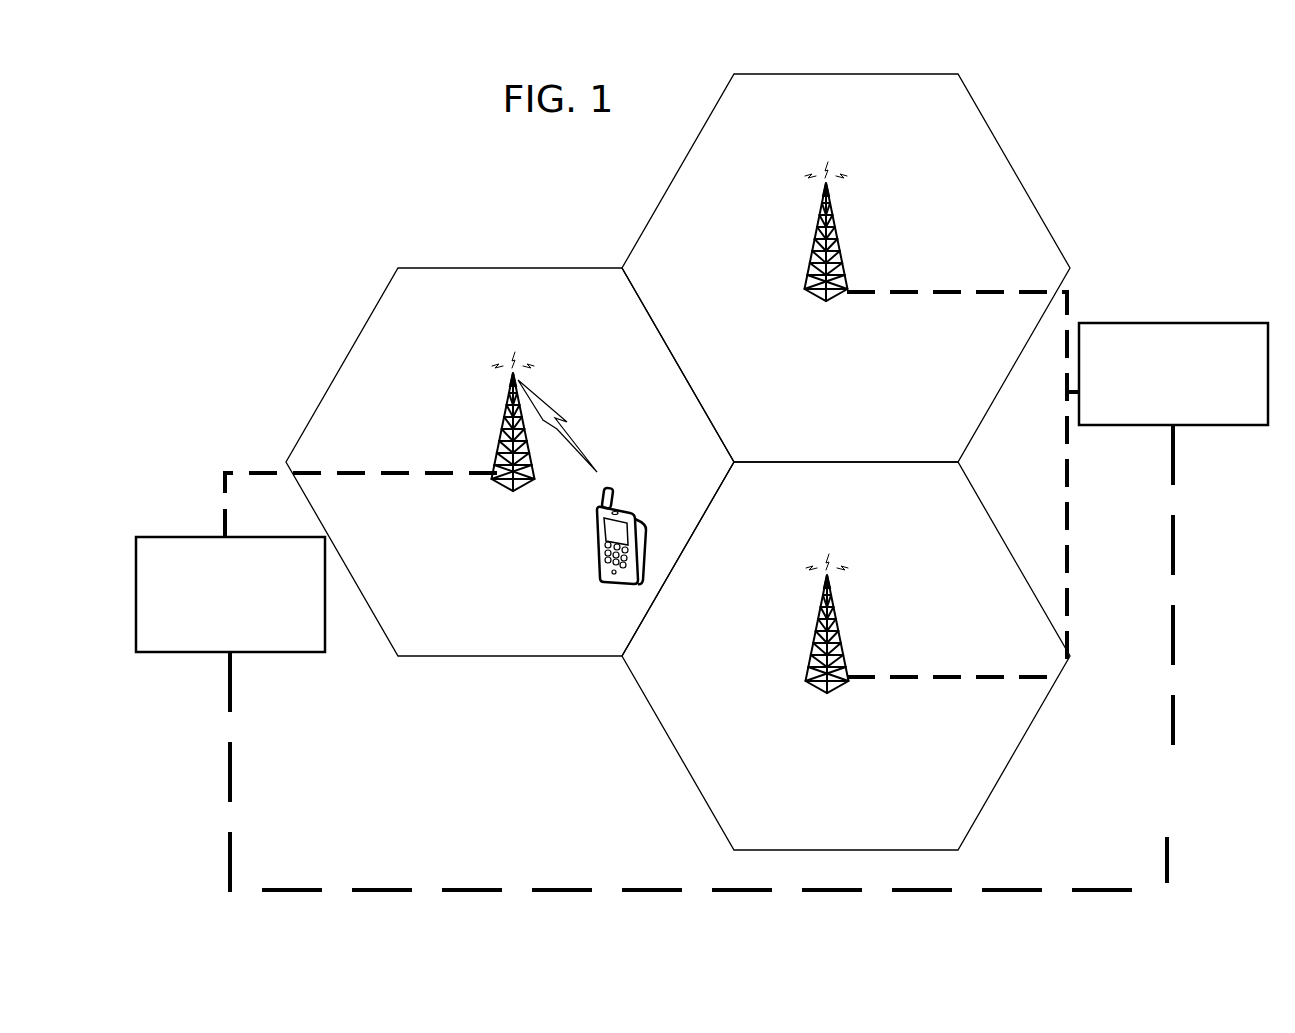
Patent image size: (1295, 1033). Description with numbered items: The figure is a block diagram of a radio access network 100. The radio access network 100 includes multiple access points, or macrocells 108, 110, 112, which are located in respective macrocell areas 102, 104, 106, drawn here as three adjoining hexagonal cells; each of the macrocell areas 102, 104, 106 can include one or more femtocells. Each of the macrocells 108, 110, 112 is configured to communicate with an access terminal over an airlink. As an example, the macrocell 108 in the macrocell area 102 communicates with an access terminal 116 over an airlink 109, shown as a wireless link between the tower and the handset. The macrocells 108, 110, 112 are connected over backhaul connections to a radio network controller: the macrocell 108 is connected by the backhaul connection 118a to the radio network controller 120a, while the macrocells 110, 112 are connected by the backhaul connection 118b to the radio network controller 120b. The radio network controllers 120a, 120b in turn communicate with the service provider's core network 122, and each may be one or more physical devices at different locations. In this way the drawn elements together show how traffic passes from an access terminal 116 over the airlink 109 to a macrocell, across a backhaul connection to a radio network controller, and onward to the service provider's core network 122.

The radio access network 100 is at (442, 156).
The macrocell area 102 is at (344, 346).
The macrocell area 104 is at (997, 133).
The macrocell area 106 is at (650, 756).
The macrocell 108 is at (513, 493).
The airlink 109 is at (560, 419).
The macrocell 110 is at (826, 304).
The macrocell 112 is at (827, 693).
The access terminal 116 is at (594, 583).
The backhaul connection 118a is at (223, 493).
The backhaul connection 118b is at (1067, 587).
The radio network controller 120a is at (230, 594).
The radio network controller 120b is at (1173, 374).
The service provider's core network 122 is at (1158, 745).